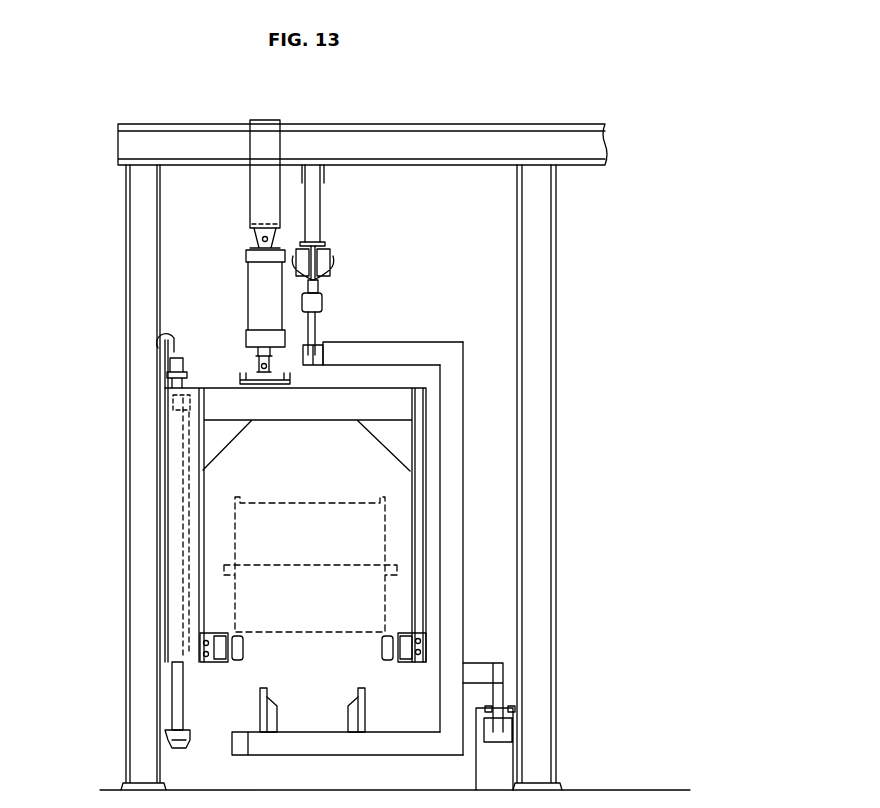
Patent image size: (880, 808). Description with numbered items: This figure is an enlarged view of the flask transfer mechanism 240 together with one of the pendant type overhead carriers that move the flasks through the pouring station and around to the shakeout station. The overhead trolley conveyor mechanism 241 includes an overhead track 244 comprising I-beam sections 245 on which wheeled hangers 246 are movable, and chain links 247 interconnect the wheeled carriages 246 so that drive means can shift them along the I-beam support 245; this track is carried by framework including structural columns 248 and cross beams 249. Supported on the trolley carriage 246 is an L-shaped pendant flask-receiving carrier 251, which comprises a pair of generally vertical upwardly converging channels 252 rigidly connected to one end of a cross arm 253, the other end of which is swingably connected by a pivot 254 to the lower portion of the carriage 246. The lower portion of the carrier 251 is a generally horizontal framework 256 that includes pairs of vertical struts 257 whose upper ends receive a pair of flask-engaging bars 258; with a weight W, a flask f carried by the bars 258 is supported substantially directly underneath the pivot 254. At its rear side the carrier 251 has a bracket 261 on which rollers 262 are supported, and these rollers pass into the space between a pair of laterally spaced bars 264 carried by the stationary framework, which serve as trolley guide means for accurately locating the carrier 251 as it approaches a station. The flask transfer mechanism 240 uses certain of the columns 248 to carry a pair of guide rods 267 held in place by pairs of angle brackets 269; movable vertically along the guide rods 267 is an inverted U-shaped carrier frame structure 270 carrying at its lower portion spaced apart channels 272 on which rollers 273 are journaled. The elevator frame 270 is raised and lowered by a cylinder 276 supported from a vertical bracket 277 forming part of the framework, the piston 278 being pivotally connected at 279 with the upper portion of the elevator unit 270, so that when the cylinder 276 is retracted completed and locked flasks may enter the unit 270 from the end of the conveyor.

The cross beam 249 is at (403, 135).
The structural column 248 is at (132, 296).
The vertical bracket 277 is at (262, 201).
The cylinder 276 is at (246, 282).
The piston 278 is at (257, 362).
The pivotal connection 279 is at (268, 382).
The overhead track 244 is at (328, 233).
The I-beam section 245 is at (323, 244).
The wheeled hanger 246 is at (333, 274).
The chain link 247 is at (320, 294).
The overhead trolley conveyor mechanism 241 is at (348, 287).
The pivot 254 is at (315, 356).
The flask-receiving carrier 251 is at (372, 550).
The cross arm 253 is at (395, 345).
The vertical channel 252 is at (455, 441).
The horizontal framework 256 is at (402, 757).
The flask transfer mechanism 240 is at (218, 386).
The flask f is at (319, 497).
The carrier frame structure 270 is at (204, 498).
The guide rod 267 is at (178, 685).
The angle bracket 269 is at (163, 337).
The channel 272 is at (226, 655).
The roller 273 is at (243, 645).
The flask-engaging bar 258 is at (261, 695).
The vertical strut 257 is at (354, 712).
The weight W is at (236, 750).
The bracket 261 is at (479, 668).
The roller 262 is at (513, 716).
The bar 264 is at (514, 706).